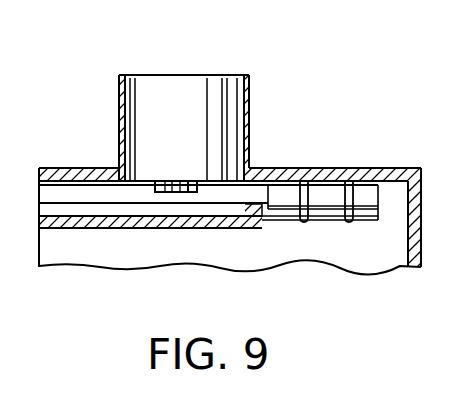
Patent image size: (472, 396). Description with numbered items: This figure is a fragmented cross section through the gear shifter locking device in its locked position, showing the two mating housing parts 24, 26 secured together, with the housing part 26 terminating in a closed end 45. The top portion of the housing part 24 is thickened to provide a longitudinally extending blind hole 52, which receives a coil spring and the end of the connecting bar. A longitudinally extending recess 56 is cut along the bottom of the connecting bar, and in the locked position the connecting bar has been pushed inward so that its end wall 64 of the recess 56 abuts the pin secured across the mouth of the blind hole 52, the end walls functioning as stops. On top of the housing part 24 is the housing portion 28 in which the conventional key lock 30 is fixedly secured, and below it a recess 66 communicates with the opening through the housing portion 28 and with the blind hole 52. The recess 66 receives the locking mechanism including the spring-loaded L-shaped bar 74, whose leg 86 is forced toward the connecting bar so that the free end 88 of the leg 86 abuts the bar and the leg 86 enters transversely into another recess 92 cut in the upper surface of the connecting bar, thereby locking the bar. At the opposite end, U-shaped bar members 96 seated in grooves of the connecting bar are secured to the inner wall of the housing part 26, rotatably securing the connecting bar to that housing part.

The housing part 24 is at (43, 167).
The housing part 26 is at (413, 166).
The housing portion 28 is at (249, 121).
The key lock 30 is at (200, 88).
The closed end 45 is at (421, 214).
The blind hole 52 is at (103, 220).
The recess 56 is at (207, 206).
The end wall 64 is at (285, 220).
The recess 66 is at (258, 210).
The L-shaped bar 74 is at (181, 182).
The leg 86 is at (158, 183).
The free end 88 is at (178, 193).
The recess 92 is at (193, 180).
The U-shaped bar members 96 is at (314, 196).